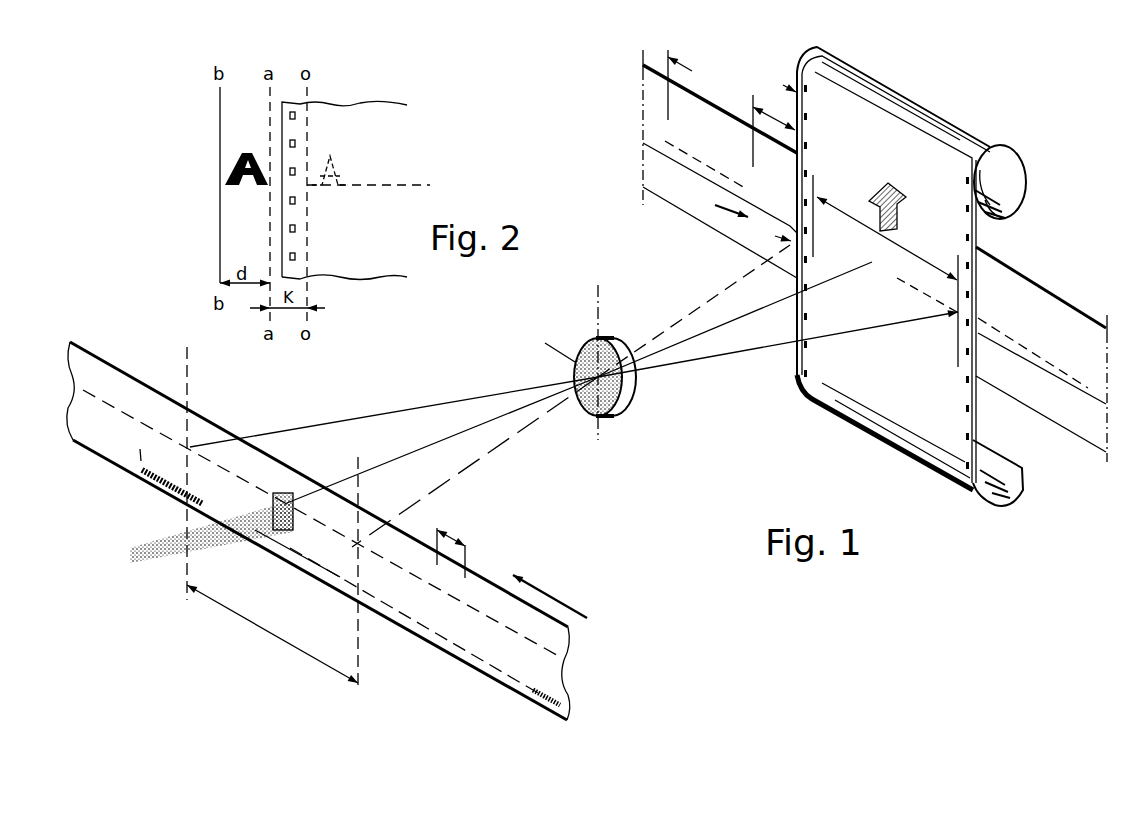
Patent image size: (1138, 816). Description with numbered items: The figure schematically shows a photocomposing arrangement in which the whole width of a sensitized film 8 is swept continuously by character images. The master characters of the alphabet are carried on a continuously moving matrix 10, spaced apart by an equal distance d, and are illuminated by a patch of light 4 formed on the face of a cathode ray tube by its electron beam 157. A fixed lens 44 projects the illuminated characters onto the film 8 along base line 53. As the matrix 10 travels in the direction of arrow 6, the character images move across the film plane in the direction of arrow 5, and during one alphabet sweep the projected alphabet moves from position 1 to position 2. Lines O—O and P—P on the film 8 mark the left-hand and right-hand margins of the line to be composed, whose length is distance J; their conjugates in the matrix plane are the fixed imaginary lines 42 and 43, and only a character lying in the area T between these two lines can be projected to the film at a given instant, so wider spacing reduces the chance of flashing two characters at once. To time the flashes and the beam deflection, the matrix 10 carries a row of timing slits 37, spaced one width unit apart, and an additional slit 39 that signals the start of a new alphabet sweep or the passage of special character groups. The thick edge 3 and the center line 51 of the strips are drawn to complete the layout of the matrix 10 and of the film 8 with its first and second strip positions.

In FIG. 1, the position 1 is at (712, 187).
In FIG. 1, the position 2 is at (1053, 378).
In FIG. 1, the reference edge of film strip 3 is at (703, 101).
In FIG. 1, the patch of light 4 is at (281, 494).
In FIG. 1, the arrow 5 is at (724, 212).
In FIG. 1, the arrow 6 is at (550, 596).
In FIG. 2, the sensitized film 8 is at (341, 268).
In FIG. 1, the sensitized film 8 is at (921, 448).
In FIG. 1, the matrix 10 is at (565, 670).
In FIG. 1, the timing slits 37 is at (533, 692).
In FIG. 1, the additional slit 39 is at (140, 455).
In FIG. 1, the fixed imaginary line 42 is at (191, 389).
In FIG. 1, the fixed imaginary line 43 is at (362, 487).
In FIG. 1, the lens 44 is at (628, 400).
In FIG. 1, the center line 51 is at (118, 408).
In FIG. 1, the base line 53 is at (926, 294).
In FIG. 1, the electron beam 157 is at (166, 548).